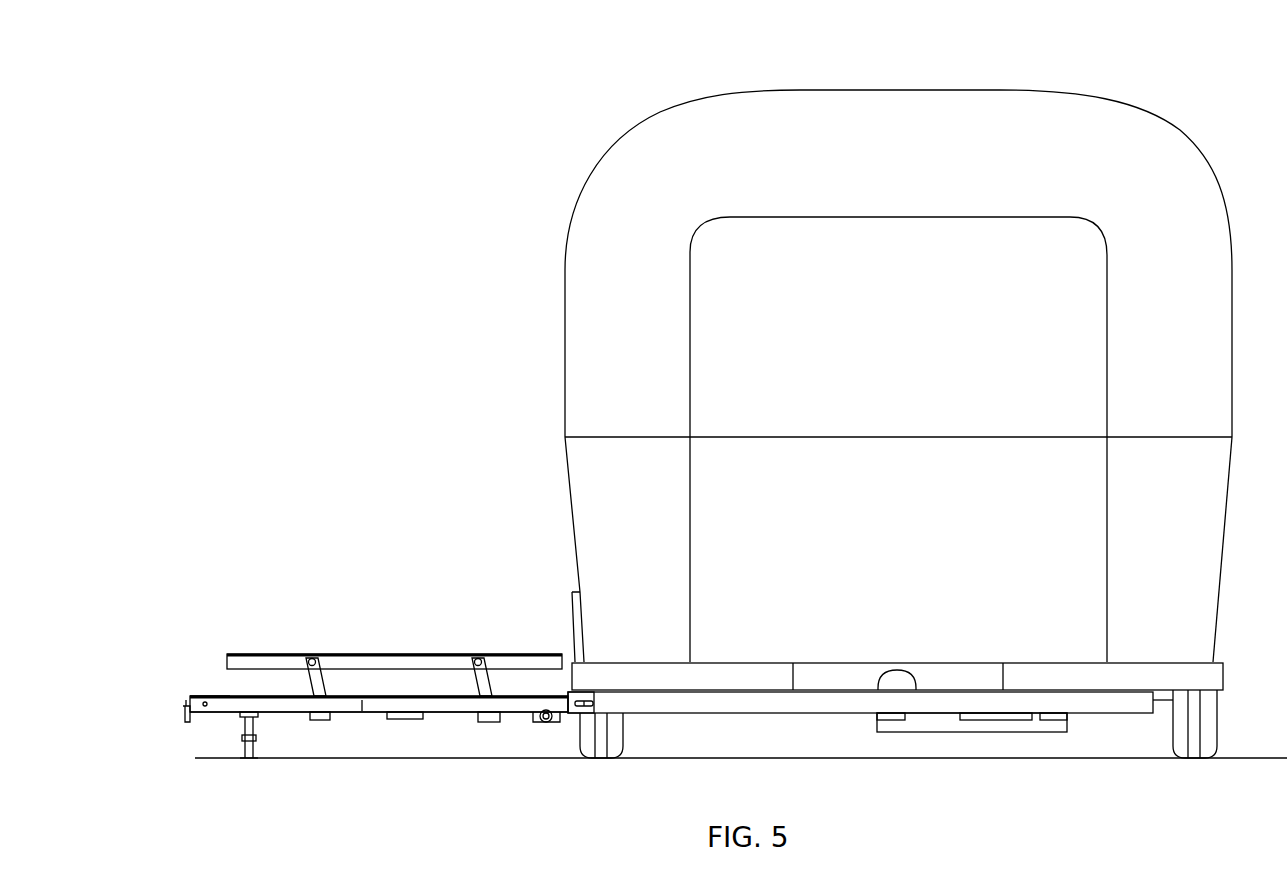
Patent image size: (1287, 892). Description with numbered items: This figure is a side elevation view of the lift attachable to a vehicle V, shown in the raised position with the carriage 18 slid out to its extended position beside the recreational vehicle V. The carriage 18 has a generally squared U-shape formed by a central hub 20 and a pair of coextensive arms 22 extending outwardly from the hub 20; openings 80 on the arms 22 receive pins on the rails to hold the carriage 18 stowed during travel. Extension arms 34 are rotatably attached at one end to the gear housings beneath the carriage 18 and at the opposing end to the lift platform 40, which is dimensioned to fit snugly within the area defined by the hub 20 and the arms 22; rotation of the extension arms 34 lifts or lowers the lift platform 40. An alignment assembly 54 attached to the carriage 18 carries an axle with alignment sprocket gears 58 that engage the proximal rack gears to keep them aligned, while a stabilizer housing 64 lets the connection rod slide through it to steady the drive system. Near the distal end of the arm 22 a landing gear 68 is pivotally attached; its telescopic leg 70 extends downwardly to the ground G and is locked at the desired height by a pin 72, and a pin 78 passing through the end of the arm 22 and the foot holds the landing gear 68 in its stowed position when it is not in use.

The carriage 18 is at (449, 730).
The central hub 20 is at (517, 707).
The arms 22 is at (362, 706).
The extension arms 34 is at (290, 682).
The lift platform 40 is at (396, 636).
The alignment assembly 54 is at (557, 740).
The alignment sprocket gears 58 is at (547, 724).
The stabilizer housing 64 is at (396, 719).
The landing gear 68 is at (228, 753).
The leg 70 is at (258, 718).
The pin 72 is at (257, 739).
The pin 78 is at (183, 718).
The openings 80 is at (204, 698).
The vehicle V is at (640, 103).
The ground G is at (926, 771).